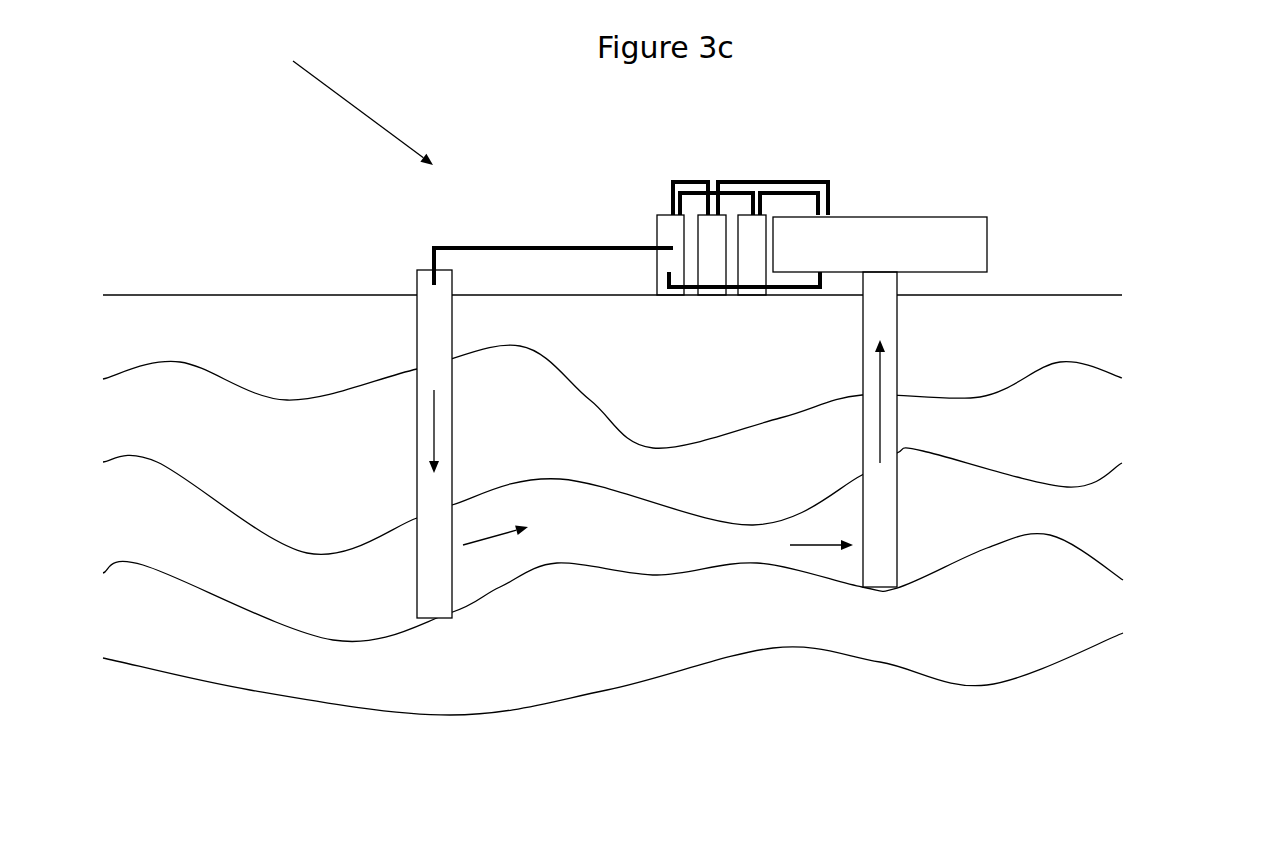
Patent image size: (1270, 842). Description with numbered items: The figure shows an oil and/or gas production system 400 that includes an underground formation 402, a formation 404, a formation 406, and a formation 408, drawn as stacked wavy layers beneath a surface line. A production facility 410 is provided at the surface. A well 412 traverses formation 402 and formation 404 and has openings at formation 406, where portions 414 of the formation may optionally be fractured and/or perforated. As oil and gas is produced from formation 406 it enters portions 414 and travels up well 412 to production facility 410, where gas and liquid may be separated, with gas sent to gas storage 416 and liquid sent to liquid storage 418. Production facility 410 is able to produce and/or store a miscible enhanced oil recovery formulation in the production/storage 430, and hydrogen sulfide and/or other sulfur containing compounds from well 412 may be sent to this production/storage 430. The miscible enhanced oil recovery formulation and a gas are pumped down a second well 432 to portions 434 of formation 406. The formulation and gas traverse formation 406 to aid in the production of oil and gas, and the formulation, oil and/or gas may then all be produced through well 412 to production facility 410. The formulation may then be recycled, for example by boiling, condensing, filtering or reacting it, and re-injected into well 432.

The system 400 is at (339, 105).
The underground formation 402 is at (612, 371).
The formation 404 is at (612, 480).
The formation 406 is at (613, 563).
The formation 408 is at (613, 643).
The production facility 410 is at (902, 256).
The well 412 is at (897, 322).
The portions of formation 414 is at (913, 553).
The gas storage 416 is at (752, 237).
The liquid storage 418 is at (713, 239).
The miscible enhanced oil recovery formulation production/storage 430 is at (668, 230).
The well 432 is at (435, 332).
The portions of formation 434 is at (472, 573).